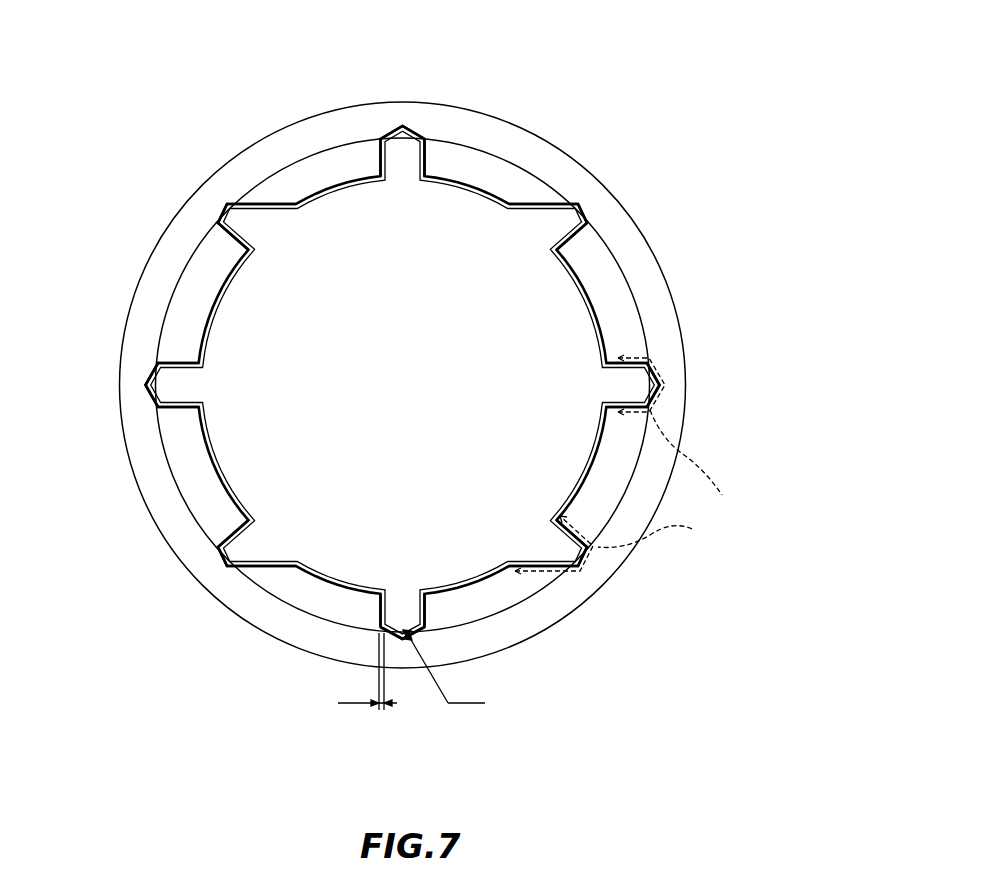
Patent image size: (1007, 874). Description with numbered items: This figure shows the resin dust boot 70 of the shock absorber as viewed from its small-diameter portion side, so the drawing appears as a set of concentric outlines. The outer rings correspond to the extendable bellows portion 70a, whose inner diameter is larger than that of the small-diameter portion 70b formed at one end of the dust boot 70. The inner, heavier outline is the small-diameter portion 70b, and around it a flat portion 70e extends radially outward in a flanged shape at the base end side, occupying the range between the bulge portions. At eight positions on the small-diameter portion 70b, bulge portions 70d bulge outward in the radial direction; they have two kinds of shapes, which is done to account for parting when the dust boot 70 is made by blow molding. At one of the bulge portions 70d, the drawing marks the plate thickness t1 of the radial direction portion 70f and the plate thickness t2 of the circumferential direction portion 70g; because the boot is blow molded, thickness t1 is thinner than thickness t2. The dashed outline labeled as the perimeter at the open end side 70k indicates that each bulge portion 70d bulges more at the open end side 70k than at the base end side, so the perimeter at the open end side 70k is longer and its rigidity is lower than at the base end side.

The dust boot 70 is at (512, 122).
The bellows portion 70a is at (307, 145).
The small-diameter portion 70b is at (352, 182).
The bulge portion 70d is at (408, 135).
The flat portion 70e is at (467, 167).
The radial direction portion 70f is at (378, 613).
The circumferential direction portion 70g is at (402, 642).
The open end side 70k is at (686, 464).
The plate thickness of radial direction portion t1 is at (367, 671).
The plate thickness of circumferential direction portion t2 is at (444, 667).